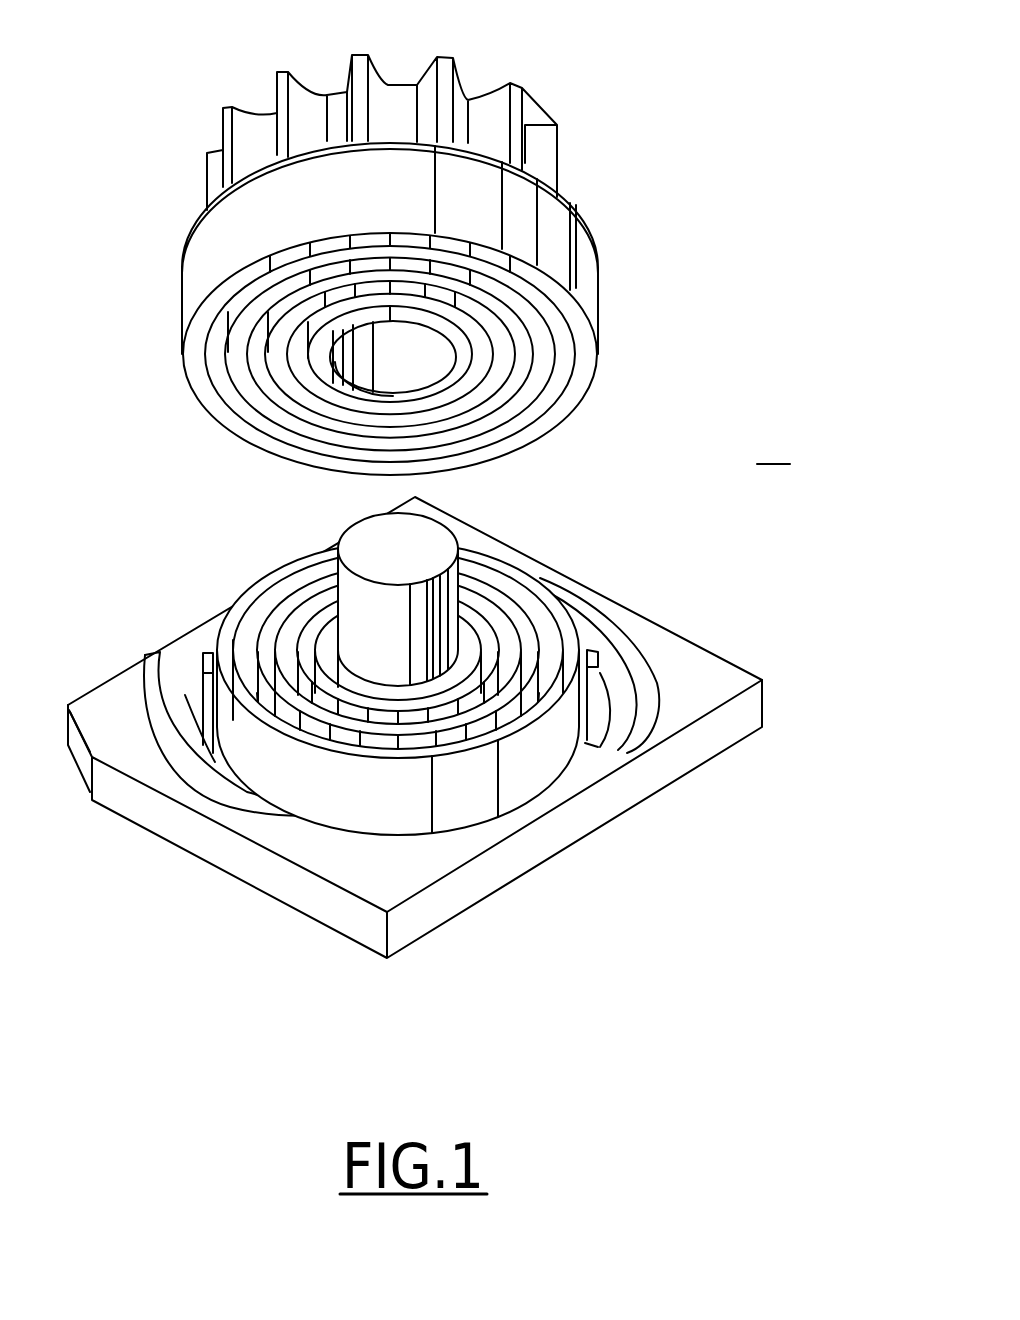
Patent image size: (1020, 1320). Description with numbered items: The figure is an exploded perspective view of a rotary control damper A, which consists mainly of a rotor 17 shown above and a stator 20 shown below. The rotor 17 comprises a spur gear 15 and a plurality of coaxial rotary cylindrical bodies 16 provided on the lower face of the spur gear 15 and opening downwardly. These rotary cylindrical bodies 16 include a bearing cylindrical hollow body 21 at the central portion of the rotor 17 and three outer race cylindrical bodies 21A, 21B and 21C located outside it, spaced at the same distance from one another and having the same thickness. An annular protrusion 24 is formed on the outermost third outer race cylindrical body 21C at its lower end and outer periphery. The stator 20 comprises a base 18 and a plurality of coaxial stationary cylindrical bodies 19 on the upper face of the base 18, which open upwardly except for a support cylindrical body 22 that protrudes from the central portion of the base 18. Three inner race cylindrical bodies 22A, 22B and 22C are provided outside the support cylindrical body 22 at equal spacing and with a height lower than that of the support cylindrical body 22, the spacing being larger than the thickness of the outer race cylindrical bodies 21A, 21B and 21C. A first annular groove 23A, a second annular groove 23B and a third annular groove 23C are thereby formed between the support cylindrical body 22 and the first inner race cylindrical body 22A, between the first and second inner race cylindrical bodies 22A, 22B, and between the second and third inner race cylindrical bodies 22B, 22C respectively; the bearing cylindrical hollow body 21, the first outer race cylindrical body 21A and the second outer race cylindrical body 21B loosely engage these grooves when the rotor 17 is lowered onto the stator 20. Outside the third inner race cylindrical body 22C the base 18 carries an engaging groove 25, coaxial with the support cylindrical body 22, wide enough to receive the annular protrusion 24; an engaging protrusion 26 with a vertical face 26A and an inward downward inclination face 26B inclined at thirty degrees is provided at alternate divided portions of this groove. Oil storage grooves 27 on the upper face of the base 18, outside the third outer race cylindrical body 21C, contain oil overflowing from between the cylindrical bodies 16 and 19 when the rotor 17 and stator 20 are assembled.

The spur gear 15 is at (435, 251).
The rotary cylindrical bodies 16 is at (497, 335).
The rotor 17 is at (284, 73).
The base 18 is at (712, 696).
The stationary cylindrical bodies 19 is at (497, 727).
The stator 20 is at (442, 727).
The bearing cylindrical hollow body 21 is at (455, 333).
The first outer race cylindrical body 21A is at (495, 345).
The second outer race cylindrical body 21B is at (548, 350).
The third outer race cylindrical body 21C is at (577, 399).
The support cylindrical body 22 is at (413, 538).
The first inner race cylindrical body 22A is at (470, 613).
The second inner race cylindrical body 22B is at (530, 628).
The third inner race cylindrical body 22C is at (568, 642).
The first annular groove 23A is at (465, 660).
The second annular groove 23B is at (513, 653).
The third annular groove 23C is at (553, 660).
The annular protrusion 24 is at (205, 302).
The engaging groove 25 is at (597, 723).
The engaging protrusion 26 is at (598, 660).
The vertical face 26A is at (207, 657).
The inward downward inclination face 26B is at (173, 733).
The oil storage grooves 27 is at (290, 825).
The rotary control damper A is at (773, 444).